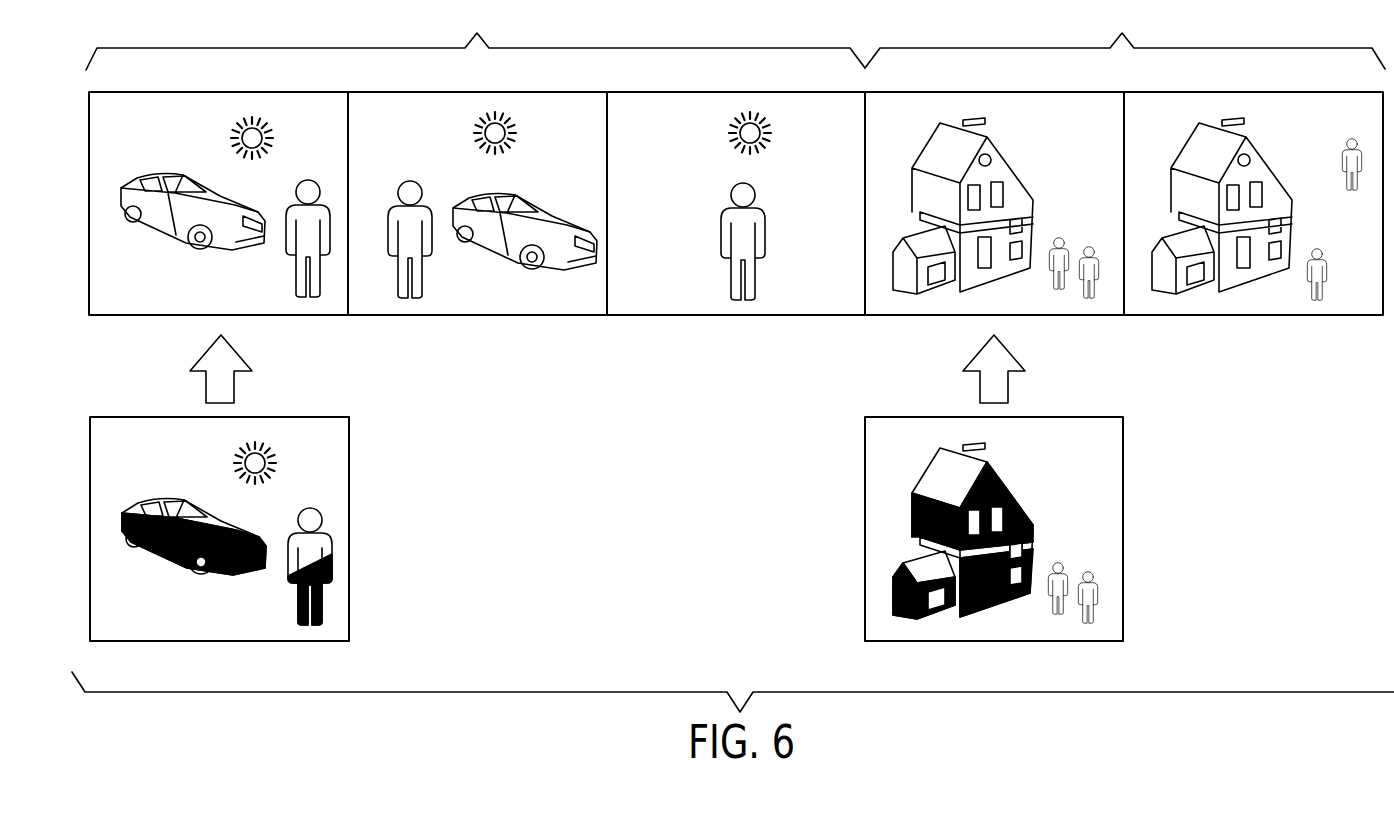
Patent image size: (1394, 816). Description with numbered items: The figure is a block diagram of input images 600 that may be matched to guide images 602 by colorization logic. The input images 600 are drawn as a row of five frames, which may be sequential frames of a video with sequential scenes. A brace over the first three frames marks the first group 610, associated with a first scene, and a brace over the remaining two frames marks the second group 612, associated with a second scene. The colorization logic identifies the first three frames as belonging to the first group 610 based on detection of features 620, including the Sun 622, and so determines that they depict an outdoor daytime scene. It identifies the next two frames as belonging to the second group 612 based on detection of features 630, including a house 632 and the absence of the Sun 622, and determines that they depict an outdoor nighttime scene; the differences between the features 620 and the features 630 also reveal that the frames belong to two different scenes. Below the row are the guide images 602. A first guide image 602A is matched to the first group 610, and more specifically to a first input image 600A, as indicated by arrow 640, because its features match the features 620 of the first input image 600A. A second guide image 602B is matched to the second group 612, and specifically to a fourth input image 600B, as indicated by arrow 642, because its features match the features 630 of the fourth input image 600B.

The input images 600 is at (84, 120).
The guide images 602 is at (86, 446).
The first group 610 is at (475, 182).
The second group 612 is at (1123, 183).
The features 620 is at (145, 137).
The Sun 622 is at (252, 116).
The features 630 is at (1014, 299).
The house 632 is at (1006, 152).
The first input image 600A is at (182, 317).
The fourth input image 600B is at (956, 317).
The first guide image 602A is at (182, 642).
The second guide image 602B is at (956, 642).
The arrow 640 is at (236, 386).
The arrow 642 is at (1010, 386).